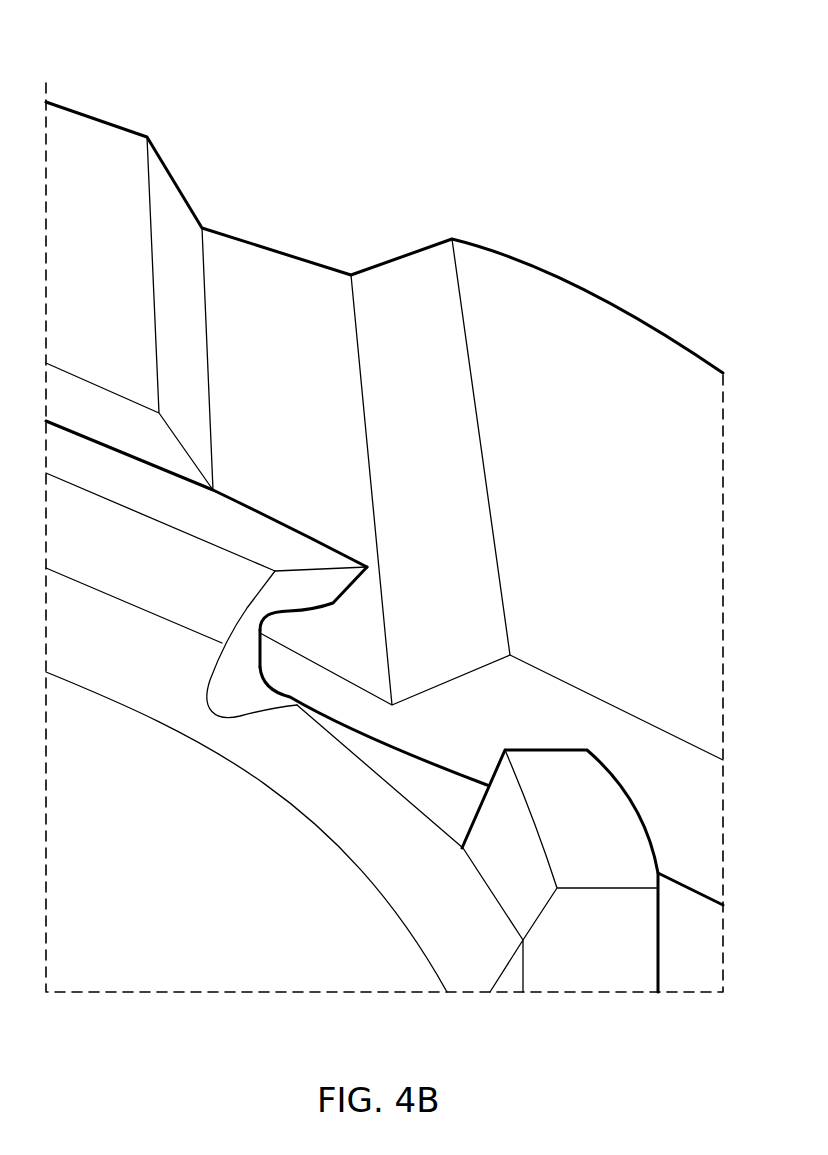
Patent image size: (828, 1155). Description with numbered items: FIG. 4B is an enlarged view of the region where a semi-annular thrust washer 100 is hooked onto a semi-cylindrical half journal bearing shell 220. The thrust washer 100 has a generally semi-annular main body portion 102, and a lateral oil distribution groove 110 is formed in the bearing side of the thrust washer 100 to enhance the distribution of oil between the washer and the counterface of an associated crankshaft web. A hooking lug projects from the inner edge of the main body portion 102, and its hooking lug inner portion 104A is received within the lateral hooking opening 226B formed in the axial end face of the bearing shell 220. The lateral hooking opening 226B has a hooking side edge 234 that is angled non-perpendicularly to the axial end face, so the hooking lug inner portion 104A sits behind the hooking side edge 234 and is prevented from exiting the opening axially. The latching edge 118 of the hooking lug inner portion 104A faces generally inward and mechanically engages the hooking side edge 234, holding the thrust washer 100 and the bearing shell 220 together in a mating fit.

The thrust washer 100 is at (553, 209).
The main body portion 102 is at (633, 350).
The lateral oil distribution grooves 110 is at (247, 255).
The hooking side edge 234 is at (313, 580).
The latching edge 118 is at (255, 610).
The hooking lug inner portion 104A is at (333, 638).
The lateral hooking opening 226B is at (372, 748).
The half journal bearing shell 220 is at (159, 869).